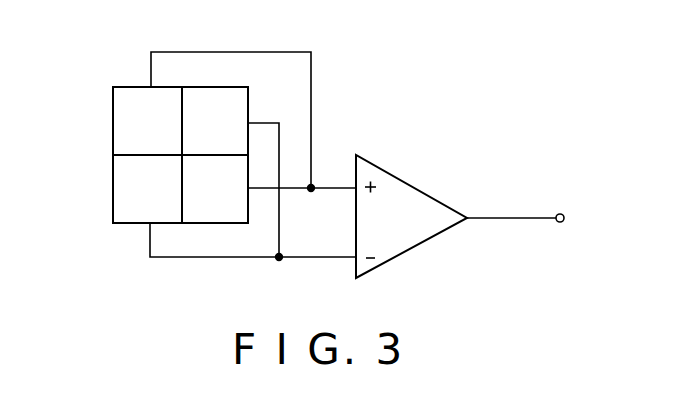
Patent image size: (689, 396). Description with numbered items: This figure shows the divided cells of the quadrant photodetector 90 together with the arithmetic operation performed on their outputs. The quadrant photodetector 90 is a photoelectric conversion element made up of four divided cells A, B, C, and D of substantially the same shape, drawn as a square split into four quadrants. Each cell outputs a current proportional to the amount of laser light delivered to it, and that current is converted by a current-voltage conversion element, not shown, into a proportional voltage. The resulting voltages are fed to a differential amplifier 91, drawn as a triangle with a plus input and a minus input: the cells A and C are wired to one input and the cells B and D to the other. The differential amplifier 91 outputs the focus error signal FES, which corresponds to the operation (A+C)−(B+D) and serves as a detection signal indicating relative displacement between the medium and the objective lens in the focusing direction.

The quadrant photodetector 90 is at (147, 155).
The differential amplifier 91 is at (415, 187).
The focus error signal FES is at (583, 218).
The divided cell A is at (215, 189).
The divided cell B is at (215, 121).
The divided cell C is at (147, 121).
The divided cell D is at (147, 189).